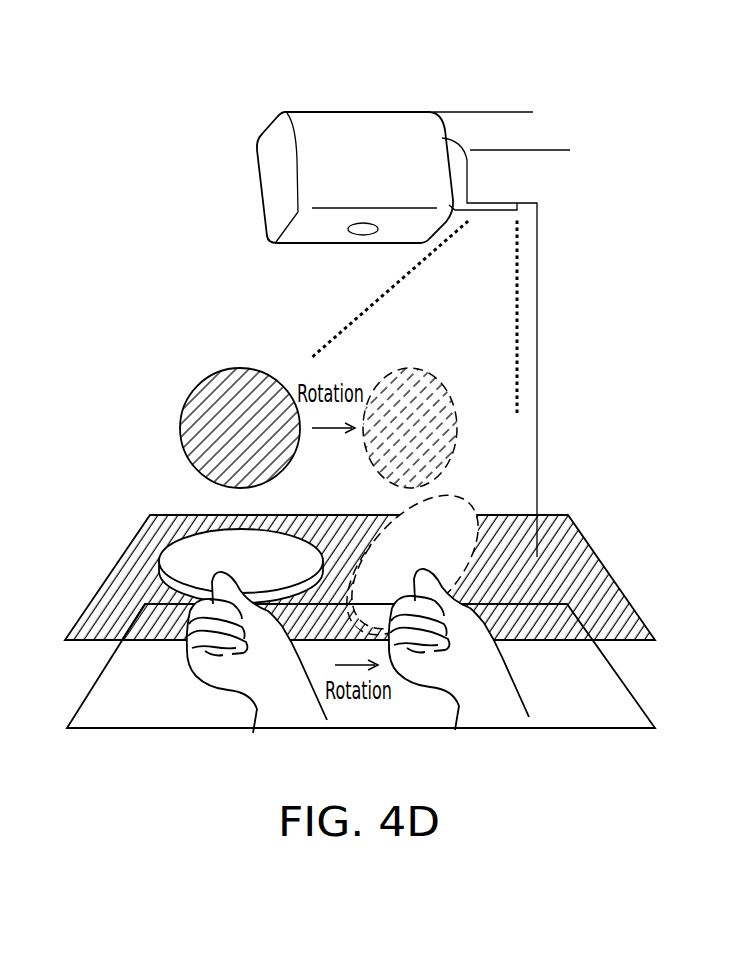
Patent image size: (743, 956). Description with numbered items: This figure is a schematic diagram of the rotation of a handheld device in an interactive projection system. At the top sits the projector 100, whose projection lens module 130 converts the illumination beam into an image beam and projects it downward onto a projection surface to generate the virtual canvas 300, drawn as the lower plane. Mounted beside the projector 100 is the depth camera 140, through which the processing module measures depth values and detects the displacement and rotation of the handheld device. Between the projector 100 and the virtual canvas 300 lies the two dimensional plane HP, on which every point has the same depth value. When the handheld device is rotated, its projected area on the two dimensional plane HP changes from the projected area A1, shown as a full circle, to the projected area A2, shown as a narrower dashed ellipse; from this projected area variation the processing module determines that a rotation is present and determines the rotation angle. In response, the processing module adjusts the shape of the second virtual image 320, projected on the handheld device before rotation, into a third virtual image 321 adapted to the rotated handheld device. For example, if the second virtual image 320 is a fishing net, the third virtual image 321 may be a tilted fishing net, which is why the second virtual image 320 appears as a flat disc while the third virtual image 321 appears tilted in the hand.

The projector 100 is at (482, 122).
The projection lens module 130 is at (359, 122).
The depth camera 140 is at (495, 207).
The virtual canvas 300 is at (565, 730).
The second virtual image 320 is at (185, 550).
The third virtual image 321 is at (383, 548).
The two dimensional plane HP is at (133, 558).
The projected area A1 is at (180, 427).
The projected area A2 is at (457, 427).